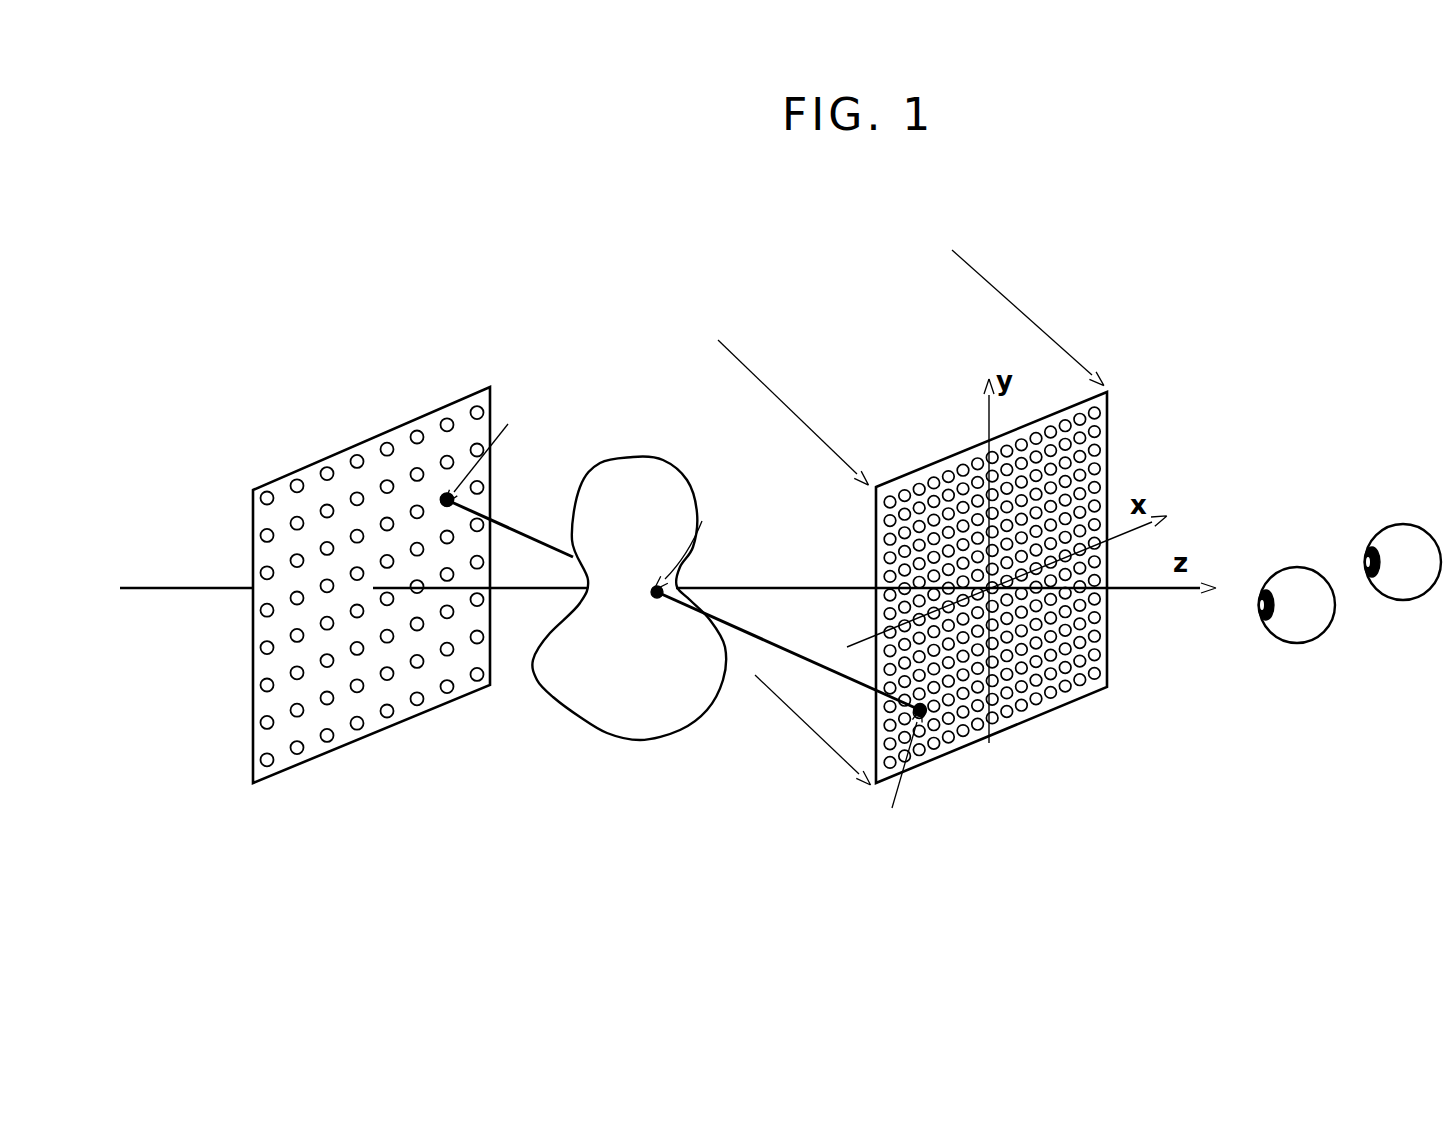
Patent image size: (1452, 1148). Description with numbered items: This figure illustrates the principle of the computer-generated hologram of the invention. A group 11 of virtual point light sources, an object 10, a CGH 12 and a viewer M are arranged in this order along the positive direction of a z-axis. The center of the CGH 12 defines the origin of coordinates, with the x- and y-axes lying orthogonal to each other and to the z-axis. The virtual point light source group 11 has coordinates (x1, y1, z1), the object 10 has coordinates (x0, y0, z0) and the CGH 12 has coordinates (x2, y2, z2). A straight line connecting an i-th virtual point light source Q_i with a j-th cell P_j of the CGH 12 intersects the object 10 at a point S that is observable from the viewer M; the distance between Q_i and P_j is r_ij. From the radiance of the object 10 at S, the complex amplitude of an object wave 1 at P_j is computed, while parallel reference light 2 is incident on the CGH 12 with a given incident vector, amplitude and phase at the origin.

The object wave 1 is at (788, 650).
The reference light 2 is at (905, 512).
The object 10 is at (684, 622).
The group of virtual point light sources 11 is at (529, 611).
The CGH 12 is at (992, 622).
The viewer M is at (1349, 609).